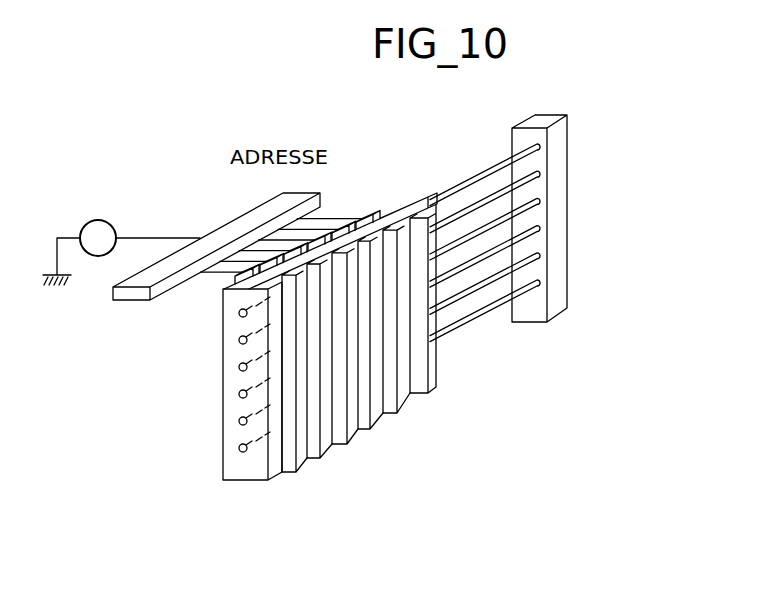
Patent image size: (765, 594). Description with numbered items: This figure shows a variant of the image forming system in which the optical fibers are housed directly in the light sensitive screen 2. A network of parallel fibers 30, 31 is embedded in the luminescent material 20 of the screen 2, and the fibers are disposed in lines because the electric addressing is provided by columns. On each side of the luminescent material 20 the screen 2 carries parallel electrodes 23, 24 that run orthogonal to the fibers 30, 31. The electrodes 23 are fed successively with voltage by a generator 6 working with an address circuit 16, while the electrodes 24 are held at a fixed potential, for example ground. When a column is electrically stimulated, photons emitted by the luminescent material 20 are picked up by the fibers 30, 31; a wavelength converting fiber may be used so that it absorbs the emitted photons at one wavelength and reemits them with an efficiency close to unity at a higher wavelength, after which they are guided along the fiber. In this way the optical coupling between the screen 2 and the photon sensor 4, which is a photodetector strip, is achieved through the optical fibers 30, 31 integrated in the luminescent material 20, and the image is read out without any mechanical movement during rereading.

The screen 2 is at (433, 190).
The photon sensor 4 is at (562, 233).
The generator 6 is at (98, 220).
The address circuit 16 is at (131, 300).
The luminescent material 20 is at (256, 480).
The electrodes 23 is at (224, 290).
The electrodes 24 is at (300, 463).
The optical fiber 30 is at (449, 332).
The optical fiber 31 is at (477, 290).